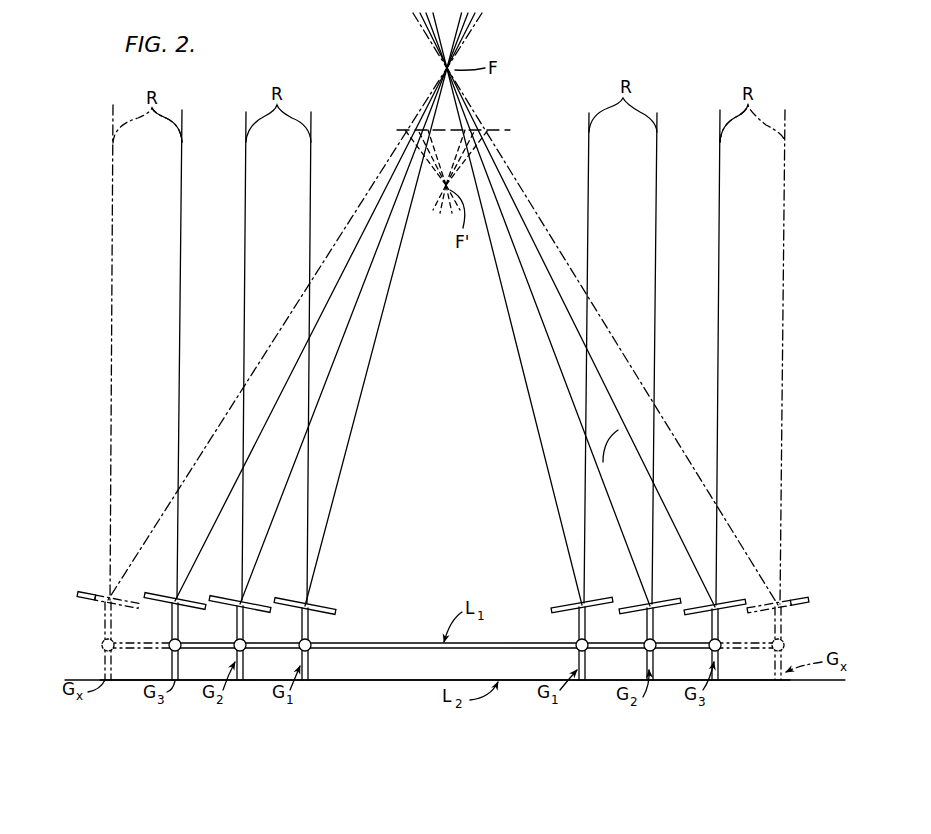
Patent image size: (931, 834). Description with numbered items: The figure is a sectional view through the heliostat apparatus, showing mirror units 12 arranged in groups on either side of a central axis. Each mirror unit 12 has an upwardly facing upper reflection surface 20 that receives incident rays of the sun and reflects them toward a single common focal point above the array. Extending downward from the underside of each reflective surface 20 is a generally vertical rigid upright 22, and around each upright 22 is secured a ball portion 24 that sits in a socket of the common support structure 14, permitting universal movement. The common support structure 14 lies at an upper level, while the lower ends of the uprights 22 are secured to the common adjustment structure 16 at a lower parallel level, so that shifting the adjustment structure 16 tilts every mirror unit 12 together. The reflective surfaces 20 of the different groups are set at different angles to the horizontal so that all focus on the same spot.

The mirror unit 12 is at (100, 618).
The common support structure 14 is at (350, 643).
The common adjustment structure 16 is at (448, 680).
The upper reflection surface 20 is at (105, 595).
The rigid upright 22 is at (112, 662).
The ball portion 24 is at (170, 641).